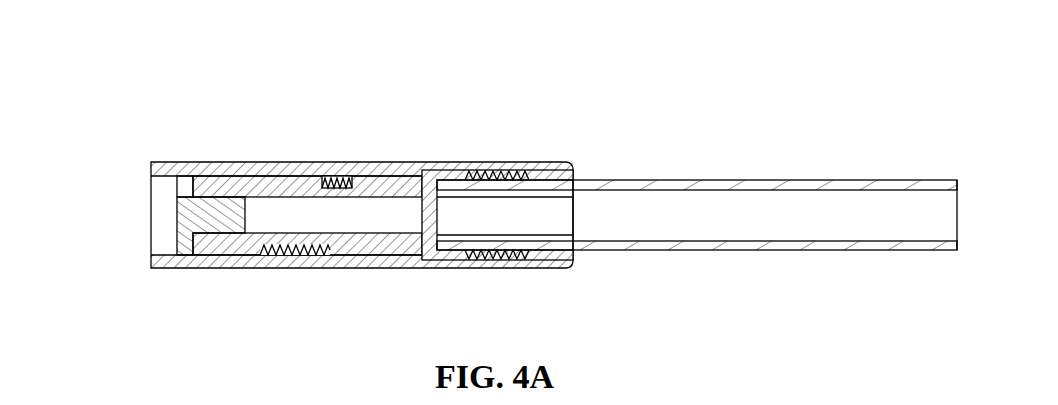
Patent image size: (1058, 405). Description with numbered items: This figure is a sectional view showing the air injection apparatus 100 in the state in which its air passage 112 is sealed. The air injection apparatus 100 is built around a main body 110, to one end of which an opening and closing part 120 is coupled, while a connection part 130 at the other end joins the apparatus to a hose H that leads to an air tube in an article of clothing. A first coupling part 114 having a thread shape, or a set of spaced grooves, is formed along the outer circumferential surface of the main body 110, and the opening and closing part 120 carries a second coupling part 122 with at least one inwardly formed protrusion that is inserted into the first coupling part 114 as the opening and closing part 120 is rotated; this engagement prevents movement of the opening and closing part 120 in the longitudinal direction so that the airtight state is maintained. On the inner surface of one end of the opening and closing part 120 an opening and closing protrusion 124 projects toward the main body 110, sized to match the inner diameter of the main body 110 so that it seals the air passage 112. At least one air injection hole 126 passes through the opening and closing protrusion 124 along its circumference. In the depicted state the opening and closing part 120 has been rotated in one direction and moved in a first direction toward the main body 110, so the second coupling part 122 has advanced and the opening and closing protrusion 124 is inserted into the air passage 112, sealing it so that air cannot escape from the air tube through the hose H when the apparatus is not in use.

The air injection apparatus 100 is at (942, 36).
The main body 110 is at (390, 162).
The air passage 112 is at (388, 218).
The first coupling part 114 is at (297, 240).
The opening and closing part 120 is at (190, 162).
The second coupling part 122 is at (335, 163).
The opening and closing protrusion 124 is at (217, 213).
The air injection hole 126 is at (182, 183).
The connection part 130 is at (552, 165).
The hose H is at (795, 198).